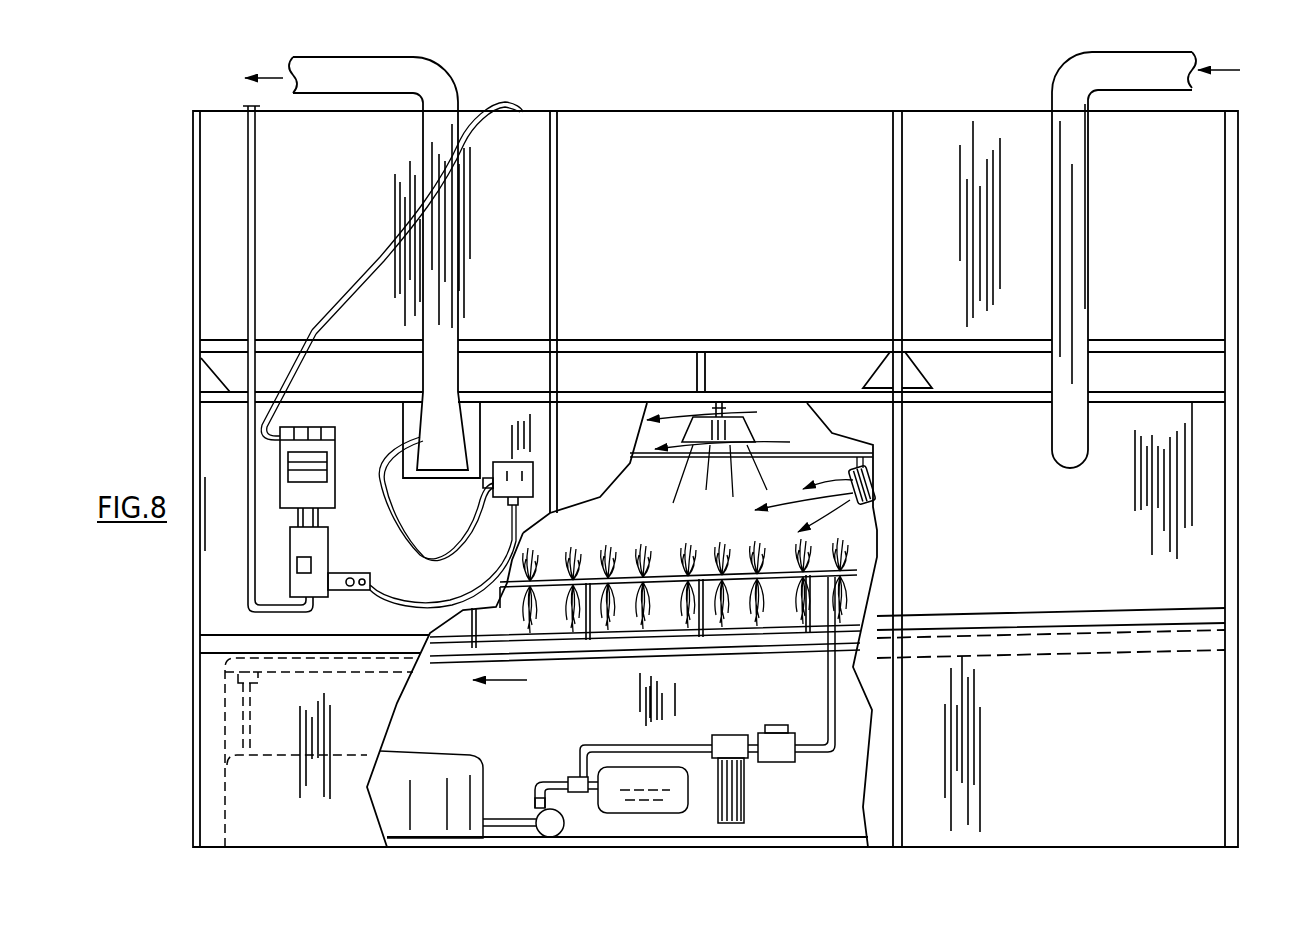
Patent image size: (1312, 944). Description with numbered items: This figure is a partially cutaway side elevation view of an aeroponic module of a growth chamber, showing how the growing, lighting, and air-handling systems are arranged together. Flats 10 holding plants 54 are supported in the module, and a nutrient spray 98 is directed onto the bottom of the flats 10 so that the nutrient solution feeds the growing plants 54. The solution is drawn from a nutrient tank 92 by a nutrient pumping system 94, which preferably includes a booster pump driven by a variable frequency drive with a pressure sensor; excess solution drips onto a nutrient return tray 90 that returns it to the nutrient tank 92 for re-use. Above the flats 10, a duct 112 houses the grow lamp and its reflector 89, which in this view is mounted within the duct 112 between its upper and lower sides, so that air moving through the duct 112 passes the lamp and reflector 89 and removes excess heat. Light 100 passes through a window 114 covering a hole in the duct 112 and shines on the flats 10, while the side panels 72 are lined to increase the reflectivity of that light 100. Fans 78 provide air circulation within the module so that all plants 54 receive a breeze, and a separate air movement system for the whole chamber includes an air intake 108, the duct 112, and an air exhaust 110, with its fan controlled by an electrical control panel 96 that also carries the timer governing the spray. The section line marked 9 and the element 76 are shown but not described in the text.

The flats 10 is at (706, 562).
The plants 54 is at (645, 556).
The side panels 72 is at (520, 138).
The support column 76 is at (558, 254).
The fans 78 is at (878, 478).
The reflector 89 is at (750, 437).
The nutrient return tray 90 is at (456, 664).
The nutrient tank 92 is at (235, 800).
The nutrient pumping system 94 is at (603, 733).
The electrical control panel 96 is at (232, 565).
The nutrient spray 98 is at (752, 617).
The light 100 is at (673, 492).
The air intake 108 is at (1130, 92).
The air exhaust 110 is at (349, 95).
The duct 112 is at (640, 457).
The window 114 is at (748, 447).
The section line 9- 9 is at (820, 370).